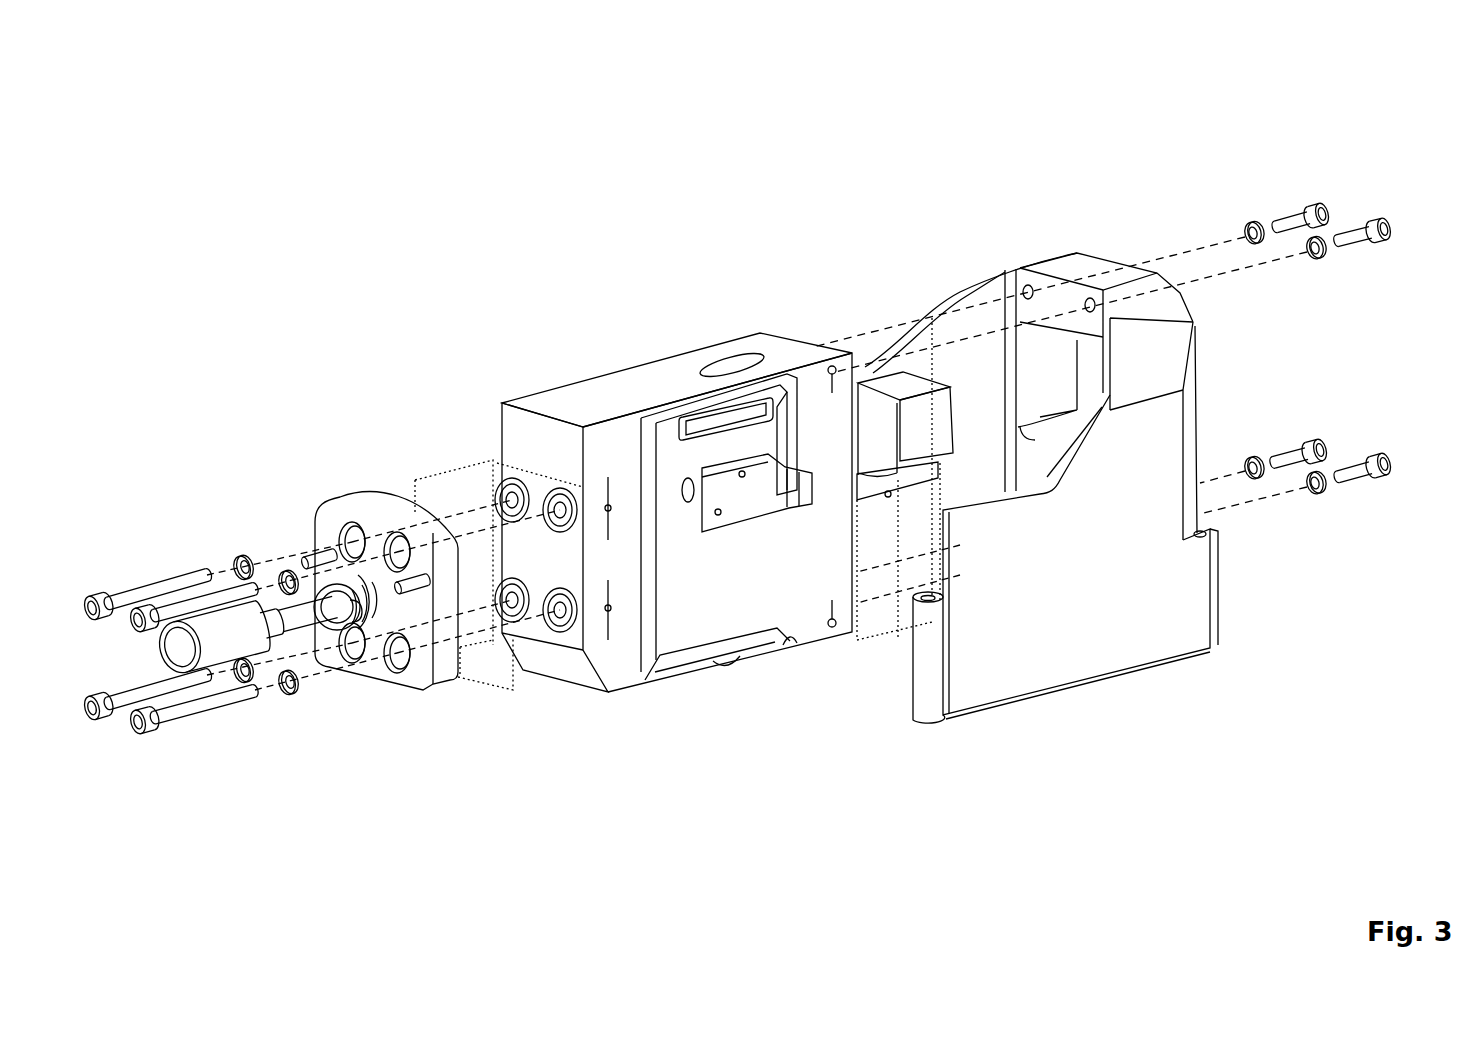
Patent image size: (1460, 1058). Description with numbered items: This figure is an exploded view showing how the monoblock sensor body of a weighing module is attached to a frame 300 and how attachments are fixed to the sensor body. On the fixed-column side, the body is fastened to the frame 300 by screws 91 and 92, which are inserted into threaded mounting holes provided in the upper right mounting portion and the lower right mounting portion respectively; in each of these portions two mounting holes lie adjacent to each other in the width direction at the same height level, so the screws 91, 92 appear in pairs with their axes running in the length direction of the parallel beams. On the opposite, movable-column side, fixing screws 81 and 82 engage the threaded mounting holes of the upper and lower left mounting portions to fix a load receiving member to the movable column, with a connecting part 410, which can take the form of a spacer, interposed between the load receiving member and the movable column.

The fixing screw 81 is at (226, 581).
The fixing screw 82 is at (193, 727).
The screw 91 is at (1294, 202).
The screw 92 is at (1284, 477).
The frame 300 is at (1087, 625).
The connecting part 410 is at (532, 700).